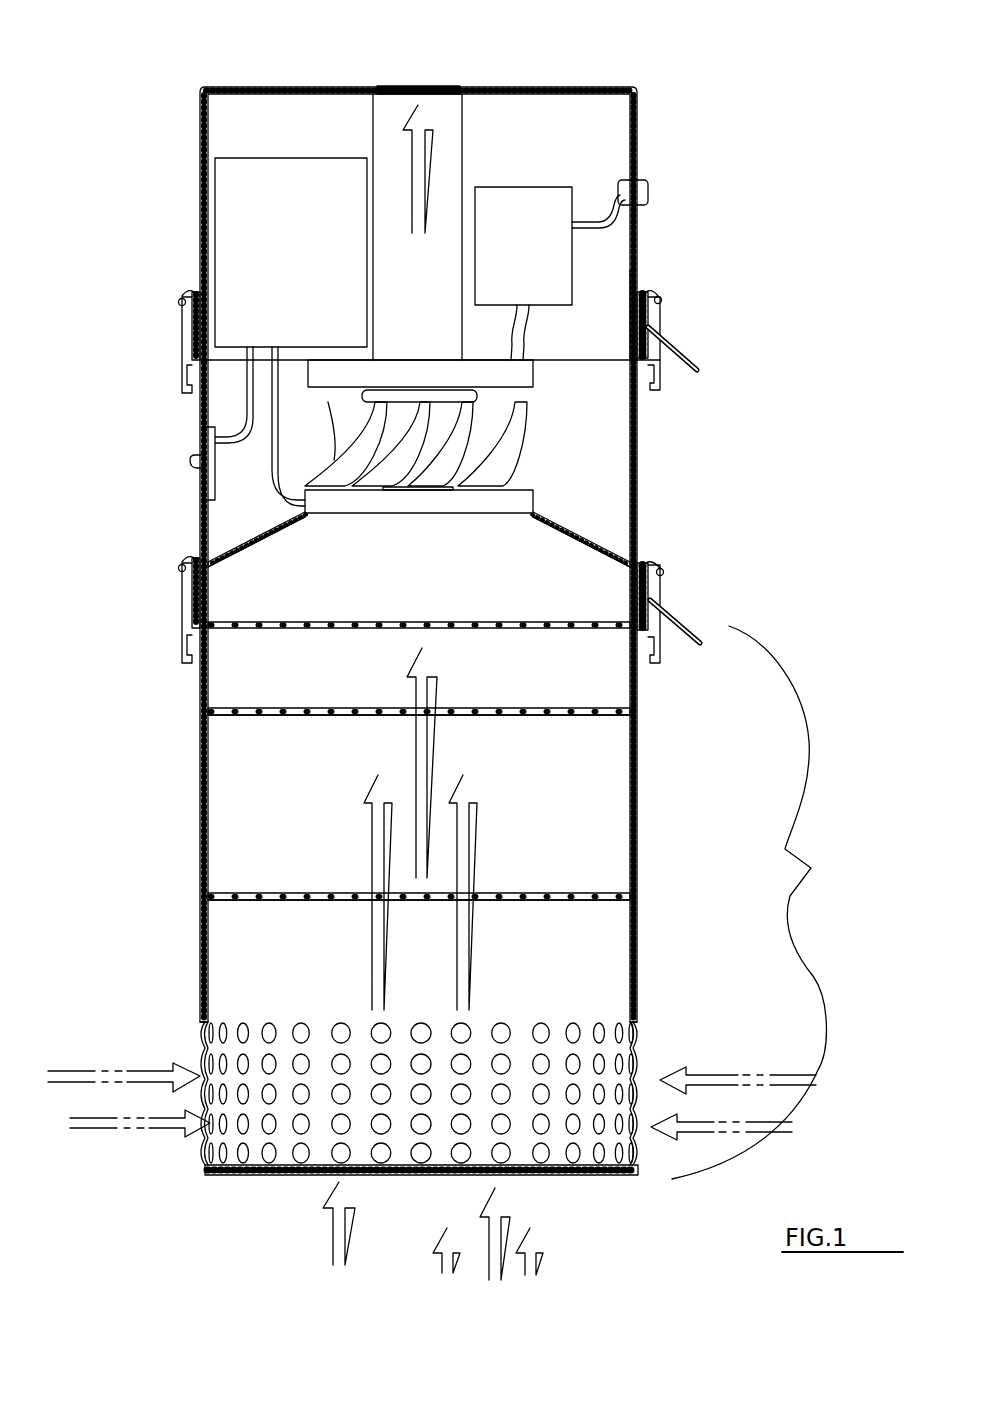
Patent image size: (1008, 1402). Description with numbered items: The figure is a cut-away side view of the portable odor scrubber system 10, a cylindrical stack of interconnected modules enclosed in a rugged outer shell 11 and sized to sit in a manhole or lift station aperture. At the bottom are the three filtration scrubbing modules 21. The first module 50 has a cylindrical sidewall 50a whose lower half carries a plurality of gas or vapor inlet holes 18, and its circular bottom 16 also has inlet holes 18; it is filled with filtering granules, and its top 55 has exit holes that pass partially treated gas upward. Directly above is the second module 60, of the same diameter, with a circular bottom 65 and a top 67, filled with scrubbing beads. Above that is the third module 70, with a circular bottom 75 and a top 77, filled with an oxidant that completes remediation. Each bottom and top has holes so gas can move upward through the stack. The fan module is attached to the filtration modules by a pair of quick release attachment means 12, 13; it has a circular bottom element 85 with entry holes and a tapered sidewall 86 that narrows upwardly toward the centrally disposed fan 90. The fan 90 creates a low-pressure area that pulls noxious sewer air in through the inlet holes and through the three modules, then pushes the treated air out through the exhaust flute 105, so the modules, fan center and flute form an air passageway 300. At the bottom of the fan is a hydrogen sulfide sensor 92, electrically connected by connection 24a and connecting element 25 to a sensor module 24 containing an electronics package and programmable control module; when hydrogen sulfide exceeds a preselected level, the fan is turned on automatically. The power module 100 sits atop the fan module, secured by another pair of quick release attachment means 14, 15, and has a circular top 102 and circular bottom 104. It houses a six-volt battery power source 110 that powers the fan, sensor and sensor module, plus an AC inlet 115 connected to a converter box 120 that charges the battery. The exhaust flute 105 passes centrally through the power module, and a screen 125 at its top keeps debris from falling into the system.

The portable odor scrubber system 10 is at (108, 760).
The rugged outer shell 11 is at (203, 805).
The quick release attachment means 12 is at (664, 578).
The quick release attachment means 13 is at (182, 565).
The quick release attachment means 14 is at (655, 322).
The quick release attachment means 15 is at (182, 298).
The bottom 16 is at (265, 1175).
The gas or vapor inlet holes 18 is at (270, 1022).
The filtration scrubbing modules 21 is at (761, 902).
The sensor module 24 is at (198, 462).
The electrical connection 24a is at (262, 395).
The connecting element 25 is at (268, 418).
The first module 50 is at (640, 975).
The cylindrical sidewall 50a is at (573, 998).
The top of the first module 55 is at (262, 901).
The second module 60 is at (640, 808).
The circular bottom of the second module 65 is at (268, 896).
The top of the second module 67 is at (295, 718).
The third module 70 is at (640, 683).
The circular bottom of the third module 75 is at (280, 715).
The top of the third module 77 is at (290, 624).
The circular bottom element 85 is at (290, 545).
The tapered sidewall 86 is at (250, 538).
The fan 90 is at (527, 440).
The hydrogen sulfide sensor 92 is at (537, 497).
The power module 100 is at (667, 247).
The circular top 102 is at (338, 87).
The circular bottom 104 is at (570, 360).
The exhaust flute 105 is at (447, 101).
The battery power source 110 is at (268, 157).
The AC inlet 115 is at (648, 184).
The converter box 120 is at (562, 186).
The screen 125 is at (418, 86).
The air passageway 300 is at (450, 280).